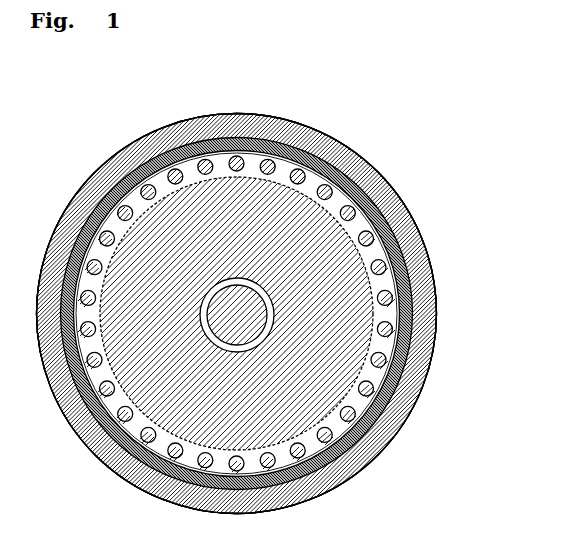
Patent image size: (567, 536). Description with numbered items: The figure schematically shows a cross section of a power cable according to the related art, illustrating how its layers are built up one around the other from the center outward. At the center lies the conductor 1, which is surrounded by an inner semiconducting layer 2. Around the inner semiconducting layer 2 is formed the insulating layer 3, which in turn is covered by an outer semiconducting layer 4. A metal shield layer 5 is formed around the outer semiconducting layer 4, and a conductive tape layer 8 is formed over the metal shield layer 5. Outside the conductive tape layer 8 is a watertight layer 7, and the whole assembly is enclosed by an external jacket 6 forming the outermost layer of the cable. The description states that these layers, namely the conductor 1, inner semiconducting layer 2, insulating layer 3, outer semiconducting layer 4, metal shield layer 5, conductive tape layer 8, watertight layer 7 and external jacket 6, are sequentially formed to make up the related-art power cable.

The conductor 1 is at (219, 300).
The inner semiconducting layer 2 is at (240, 280).
The insulating layer 3 is at (272, 228).
The outer semiconducting layer 4 is at (347, 150).
The metal shield layer 5 is at (383, 193).
The external jacket 6 is at (420, 237).
The watertight layer 7 is at (437, 295).
The conductive tape layer 8 is at (423, 321).